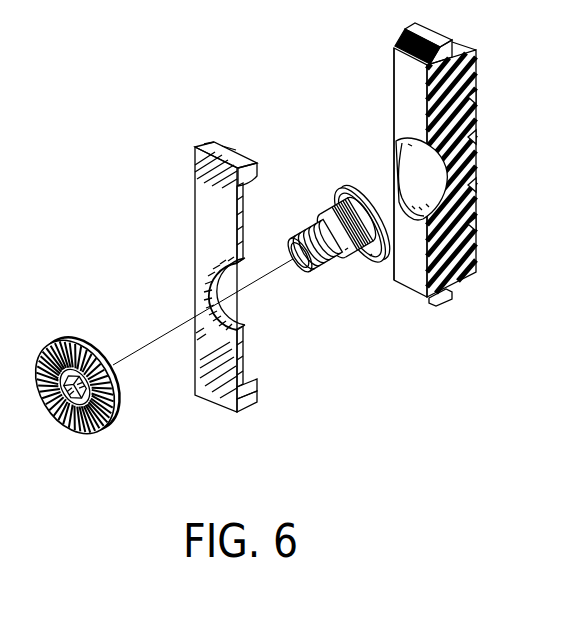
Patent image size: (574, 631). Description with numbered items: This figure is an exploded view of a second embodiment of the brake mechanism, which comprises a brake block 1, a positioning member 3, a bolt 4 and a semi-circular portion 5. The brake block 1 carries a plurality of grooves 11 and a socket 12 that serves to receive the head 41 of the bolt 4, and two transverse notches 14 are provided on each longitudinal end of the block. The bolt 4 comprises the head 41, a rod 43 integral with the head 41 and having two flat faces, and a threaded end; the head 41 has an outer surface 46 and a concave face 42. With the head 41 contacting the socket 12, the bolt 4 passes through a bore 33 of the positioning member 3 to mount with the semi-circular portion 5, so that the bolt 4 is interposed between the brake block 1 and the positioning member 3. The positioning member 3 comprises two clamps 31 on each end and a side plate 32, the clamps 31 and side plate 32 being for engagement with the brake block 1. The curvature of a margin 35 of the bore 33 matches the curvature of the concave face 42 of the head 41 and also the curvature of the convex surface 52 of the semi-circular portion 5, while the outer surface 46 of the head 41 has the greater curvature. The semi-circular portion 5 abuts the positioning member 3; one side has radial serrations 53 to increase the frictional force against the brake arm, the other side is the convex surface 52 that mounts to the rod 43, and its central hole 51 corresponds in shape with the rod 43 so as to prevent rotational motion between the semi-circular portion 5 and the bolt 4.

The brake block 1 is at (441, 172).
The grooves 11 is at (478, 93).
The socket 12 is at (399, 179).
The transverse notches 14 is at (398, 42).
The positioning member 3 is at (219, 254).
The clamps 31 is at (240, 160).
The side plate 32 is at (211, 145).
The bore 33 is at (247, 304).
The margin 35 is at (204, 293).
The bolt 4 is at (341, 226).
The head 41 is at (372, 260).
The concave face 42 is at (356, 256).
The rod 43 is at (338, 212).
The outer surface 46 is at (360, 194).
The semi-circular portion 5 is at (91, 390).
The central hole 51 is at (60, 415).
The convex surface 52 is at (115, 386).
The radial serrations 53 is at (86, 436).